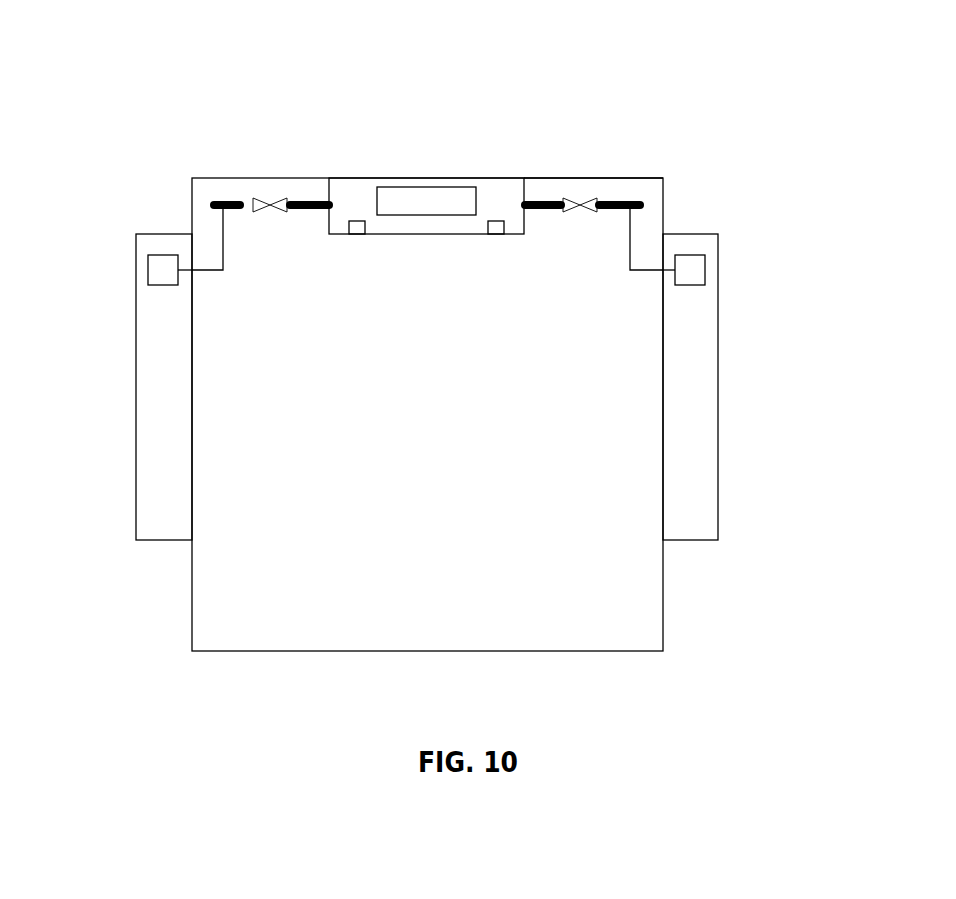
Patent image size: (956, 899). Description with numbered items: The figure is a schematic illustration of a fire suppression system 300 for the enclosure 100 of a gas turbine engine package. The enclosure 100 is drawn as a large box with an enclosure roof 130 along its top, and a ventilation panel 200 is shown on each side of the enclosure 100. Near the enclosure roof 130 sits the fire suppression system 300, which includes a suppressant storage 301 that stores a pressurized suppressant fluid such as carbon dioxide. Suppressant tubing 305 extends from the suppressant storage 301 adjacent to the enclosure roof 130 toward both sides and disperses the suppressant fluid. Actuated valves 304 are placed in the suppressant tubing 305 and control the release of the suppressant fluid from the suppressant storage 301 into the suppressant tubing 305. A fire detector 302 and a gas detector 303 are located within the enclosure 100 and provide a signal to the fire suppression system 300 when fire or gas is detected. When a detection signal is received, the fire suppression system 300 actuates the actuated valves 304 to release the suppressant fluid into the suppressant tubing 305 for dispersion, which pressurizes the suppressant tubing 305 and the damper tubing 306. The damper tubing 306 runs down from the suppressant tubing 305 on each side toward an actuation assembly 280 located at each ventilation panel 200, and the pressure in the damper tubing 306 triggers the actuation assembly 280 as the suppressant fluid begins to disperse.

The enclosure 100 is at (497, 50).
The enclosure roof 130 is at (610, 203).
The ventilation panels 200 is at (136, 328).
The actuation assembly 280 is at (148, 270).
The fire suppression system 300 is at (404, 162).
The suppressant storage 301 is at (427, 200).
The fire detector 302 is at (354, 234).
The gas detector 303 is at (500, 234).
The actuated valves 304 is at (268, 200).
The suppressant tubing 305 is at (241, 201).
The damper tubing 306 is at (224, 246).